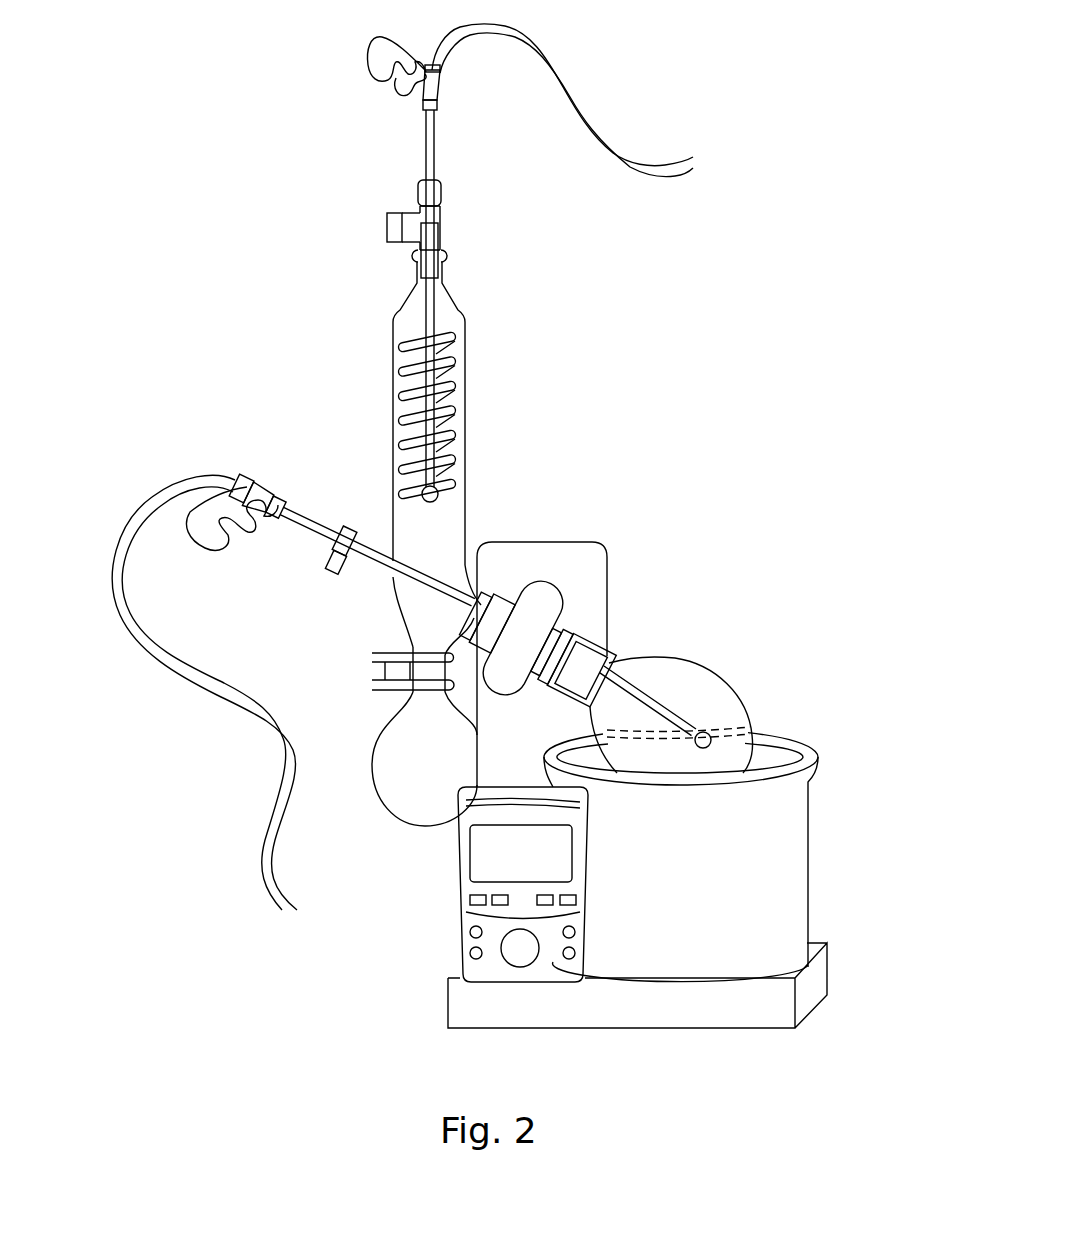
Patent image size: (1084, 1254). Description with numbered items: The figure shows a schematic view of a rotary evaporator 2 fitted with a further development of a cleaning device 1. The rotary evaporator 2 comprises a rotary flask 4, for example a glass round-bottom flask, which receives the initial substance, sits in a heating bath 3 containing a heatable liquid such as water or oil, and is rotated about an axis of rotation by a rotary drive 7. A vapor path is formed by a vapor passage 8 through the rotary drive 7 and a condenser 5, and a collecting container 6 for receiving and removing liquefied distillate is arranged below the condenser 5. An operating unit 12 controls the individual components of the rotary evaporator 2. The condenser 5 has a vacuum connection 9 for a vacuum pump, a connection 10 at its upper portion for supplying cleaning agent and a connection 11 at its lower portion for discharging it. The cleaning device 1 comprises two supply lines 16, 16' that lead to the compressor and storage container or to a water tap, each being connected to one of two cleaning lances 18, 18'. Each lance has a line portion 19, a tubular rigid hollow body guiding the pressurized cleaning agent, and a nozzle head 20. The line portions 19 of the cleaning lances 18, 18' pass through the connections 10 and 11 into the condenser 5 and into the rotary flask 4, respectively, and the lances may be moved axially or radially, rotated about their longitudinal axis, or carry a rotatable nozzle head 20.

The cleaning device 1 is at (356, 131).
The rotary evaporator 2 is at (644, 558).
The heating bath 3 is at (787, 807).
The rotary flask 4 is at (695, 683).
The condenser 5 is at (467, 367).
The collecting container 6 is at (400, 810).
The rotary drive 7 is at (549, 590).
The vapor passage 8 is at (583, 620).
The vacuum connection 9 is at (398, 228).
The connection for supplying a cleaning agent 10 is at (440, 184).
The connection for discharging the cleaning agent 11 is at (335, 557).
The operating unit 12 is at (462, 922).
The supply line 16 is at (560, 100).
The supply line 16' is at (204, 692).
The cleaning lance 18 is at (467, 269).
The cleaning lance 18' is at (488, 621).
The line portion 19 is at (395, 338).
The nozzle head 20 is at (441, 488).